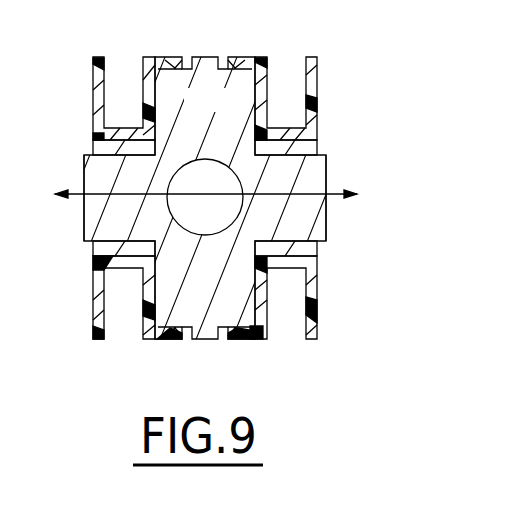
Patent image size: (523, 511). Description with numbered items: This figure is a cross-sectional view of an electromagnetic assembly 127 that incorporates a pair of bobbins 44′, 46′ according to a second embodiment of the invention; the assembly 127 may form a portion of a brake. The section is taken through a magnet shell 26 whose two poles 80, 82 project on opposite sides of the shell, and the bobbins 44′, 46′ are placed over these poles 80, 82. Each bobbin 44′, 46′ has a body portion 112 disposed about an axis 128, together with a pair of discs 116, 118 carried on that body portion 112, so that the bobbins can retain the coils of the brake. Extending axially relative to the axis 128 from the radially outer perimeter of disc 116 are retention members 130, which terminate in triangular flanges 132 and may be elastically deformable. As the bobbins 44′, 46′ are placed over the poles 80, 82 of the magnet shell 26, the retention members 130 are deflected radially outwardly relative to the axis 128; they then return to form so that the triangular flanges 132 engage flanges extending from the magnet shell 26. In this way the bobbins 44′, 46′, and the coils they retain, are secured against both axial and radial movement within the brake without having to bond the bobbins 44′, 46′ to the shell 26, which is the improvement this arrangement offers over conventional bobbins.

The electromagnetic assembly 127 is at (135, 30).
The retention members 130 is at (250, 55).
The triangular flanges 132 is at (205, 198).
The body portion 112 is at (108, 134).
The disc 118 is at (97, 80).
The axis 128 is at (330, 193).
The pole 80 is at (97, 212).
The pole 82 is at (317, 220).
The bobbin 44′ is at (100, 300).
The bobbin 46′ is at (315, 297).
The disc 116 is at (150, 290).
The magnet shell 26 is at (196, 315).